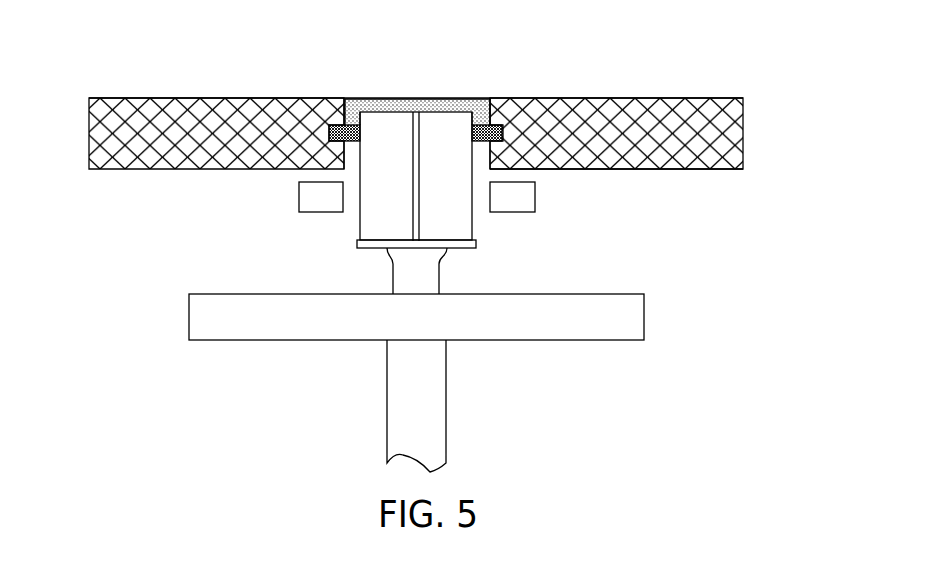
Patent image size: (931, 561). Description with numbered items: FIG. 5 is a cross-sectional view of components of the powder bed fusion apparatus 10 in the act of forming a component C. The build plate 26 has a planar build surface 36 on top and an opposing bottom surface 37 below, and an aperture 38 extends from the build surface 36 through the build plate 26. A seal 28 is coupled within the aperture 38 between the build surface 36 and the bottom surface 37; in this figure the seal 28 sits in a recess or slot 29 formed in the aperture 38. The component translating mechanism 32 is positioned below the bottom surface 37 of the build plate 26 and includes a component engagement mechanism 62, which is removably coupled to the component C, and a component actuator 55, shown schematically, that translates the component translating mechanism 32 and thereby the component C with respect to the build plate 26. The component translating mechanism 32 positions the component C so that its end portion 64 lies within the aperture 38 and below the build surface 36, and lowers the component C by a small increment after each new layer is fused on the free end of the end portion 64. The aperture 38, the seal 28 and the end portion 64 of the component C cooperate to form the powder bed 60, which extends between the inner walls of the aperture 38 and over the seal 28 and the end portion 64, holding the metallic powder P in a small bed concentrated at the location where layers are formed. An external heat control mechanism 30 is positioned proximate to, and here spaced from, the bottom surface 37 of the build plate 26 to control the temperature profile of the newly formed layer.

The powder bed fusion apparatus 10 is at (150, 66).
The build plate 26 is at (612, 110).
The seal 28 is at (333, 110).
The recess or slot 29 is at (327, 124).
The external heat control mechanism 30 is at (307, 195).
The component translating mechanism 32 is at (416, 259).
The build surface 36 is at (673, 92).
The bottom surface 37 is at (673, 177).
The aperture 38 is at (355, 100).
The component actuator 55 is at (401, 396).
The powder bed 60 is at (413, 93).
The component engagement mechanism 62 is at (223, 320).
The end portion 64 is at (446, 126).
The metallic powder P is at (383, 100).
The component C is at (457, 215).